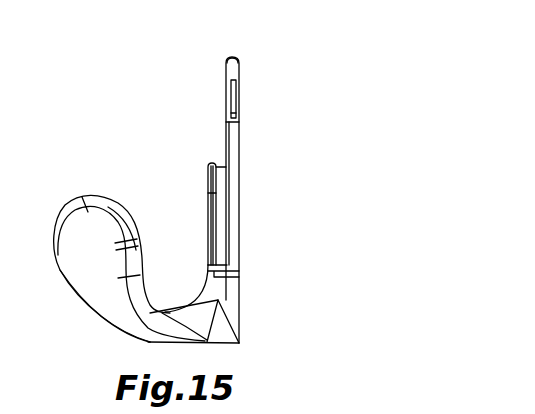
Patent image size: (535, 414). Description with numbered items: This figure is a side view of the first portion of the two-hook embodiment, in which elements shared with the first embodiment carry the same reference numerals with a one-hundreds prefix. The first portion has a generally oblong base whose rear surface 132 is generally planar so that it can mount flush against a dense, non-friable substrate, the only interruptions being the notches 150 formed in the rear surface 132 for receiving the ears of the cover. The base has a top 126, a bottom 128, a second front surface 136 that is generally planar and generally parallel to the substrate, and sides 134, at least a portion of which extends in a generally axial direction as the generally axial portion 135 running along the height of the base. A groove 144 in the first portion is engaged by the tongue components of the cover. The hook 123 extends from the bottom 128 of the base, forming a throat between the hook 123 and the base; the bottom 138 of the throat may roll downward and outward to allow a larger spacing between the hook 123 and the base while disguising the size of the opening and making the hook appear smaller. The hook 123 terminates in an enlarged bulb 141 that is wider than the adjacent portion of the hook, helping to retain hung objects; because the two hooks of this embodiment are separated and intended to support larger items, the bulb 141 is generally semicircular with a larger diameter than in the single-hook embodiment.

The hook 123 is at (93, 290).
The top 126 is at (233, 55).
The bottom 128 is at (238, 346).
The rear surface 132 is at (240, 148).
The sides 134 is at (239, 278).
The generally axial portion 135 is at (234, 192).
The second front surface 136 is at (207, 216).
The bottom of throat 138 is at (170, 310).
The bulb 141 is at (92, 204).
The groove 144 is at (222, 166).
The notches 150 is at (237, 100).